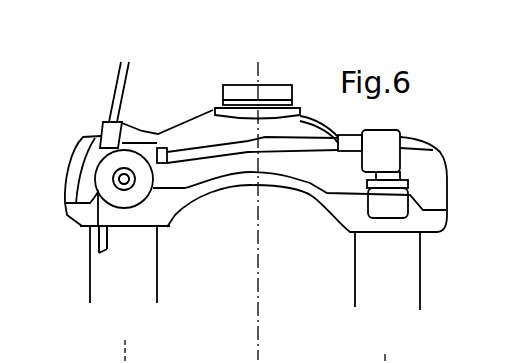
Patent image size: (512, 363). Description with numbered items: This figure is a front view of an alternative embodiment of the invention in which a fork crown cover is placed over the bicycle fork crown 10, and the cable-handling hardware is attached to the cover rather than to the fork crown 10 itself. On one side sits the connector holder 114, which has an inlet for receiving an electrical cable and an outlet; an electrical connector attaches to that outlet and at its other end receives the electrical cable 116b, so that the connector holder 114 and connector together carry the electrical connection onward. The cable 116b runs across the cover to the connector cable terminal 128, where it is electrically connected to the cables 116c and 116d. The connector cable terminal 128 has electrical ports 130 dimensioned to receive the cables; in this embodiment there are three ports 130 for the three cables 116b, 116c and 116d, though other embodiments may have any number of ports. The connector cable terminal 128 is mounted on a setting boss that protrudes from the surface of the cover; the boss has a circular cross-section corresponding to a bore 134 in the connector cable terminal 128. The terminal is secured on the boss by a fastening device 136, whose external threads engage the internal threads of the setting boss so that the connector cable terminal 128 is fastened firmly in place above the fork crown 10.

The bicycle fork crown 10 is at (185, 353).
The connector holder 114 is at (390, 208).
The electrical cable 116b is at (270, 146).
The electrical cable 116c is at (118, 68).
The electrical cable 116d is at (97, 253).
The connector cable terminal 128 is at (107, 178).
The electrical ports 130 is at (170, 97).
The bore 134 is at (124, 180).
The fastening device 136 is at (87, 141).